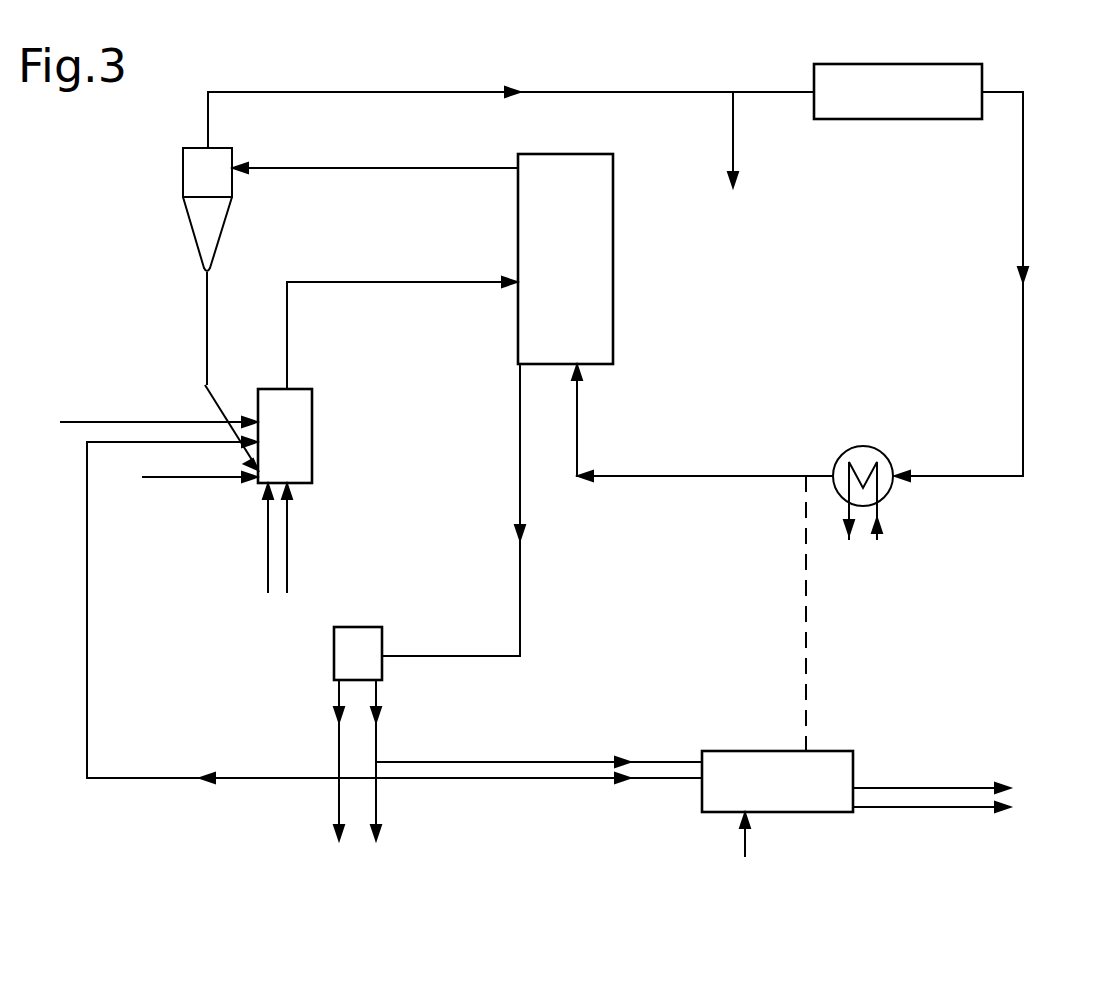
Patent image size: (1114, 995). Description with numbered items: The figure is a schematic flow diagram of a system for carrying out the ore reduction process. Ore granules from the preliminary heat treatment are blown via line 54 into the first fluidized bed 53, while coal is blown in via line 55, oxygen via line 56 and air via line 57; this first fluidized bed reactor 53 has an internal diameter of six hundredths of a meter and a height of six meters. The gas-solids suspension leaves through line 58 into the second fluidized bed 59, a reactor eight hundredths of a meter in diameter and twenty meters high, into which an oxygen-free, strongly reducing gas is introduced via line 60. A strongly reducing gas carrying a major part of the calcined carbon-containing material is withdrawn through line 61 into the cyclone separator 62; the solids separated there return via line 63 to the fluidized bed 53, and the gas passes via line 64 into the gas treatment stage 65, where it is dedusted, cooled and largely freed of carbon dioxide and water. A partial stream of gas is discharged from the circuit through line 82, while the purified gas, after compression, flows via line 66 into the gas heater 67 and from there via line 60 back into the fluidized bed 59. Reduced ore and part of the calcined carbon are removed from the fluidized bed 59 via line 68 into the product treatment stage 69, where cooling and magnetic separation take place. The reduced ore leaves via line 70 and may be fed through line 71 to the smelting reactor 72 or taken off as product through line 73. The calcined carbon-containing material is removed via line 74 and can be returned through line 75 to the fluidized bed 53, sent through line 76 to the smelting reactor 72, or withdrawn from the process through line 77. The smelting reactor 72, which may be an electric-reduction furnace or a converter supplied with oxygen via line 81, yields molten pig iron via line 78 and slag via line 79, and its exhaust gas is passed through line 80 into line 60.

The first fluidized bed 53 is at (302, 458).
The line 54 is at (60, 422).
The line 55 is at (158, 477).
The line 56 is at (268, 593).
The line 57 is at (288, 523).
The line 58 is at (293, 340).
The second fluidized bed 59 is at (517, 343).
The line 60 is at (578, 423).
The line 61 is at (397, 169).
The cyclone separator 62 is at (220, 233).
The line 63 is at (204, 385).
The line 64 is at (606, 92).
The gas treatment stage 65 is at (982, 78).
The line 66 is at (1025, 307).
The gas heater 67 is at (887, 457).
The line 68 is at (520, 452).
The product treatment stage 69 is at (356, 627).
The line 70 is at (378, 702).
The line 71 is at (512, 762).
The smelting reactor 72 is at (718, 750).
The line 73 is at (390, 802).
The line 74 is at (337, 702).
The line 75 is at (165, 778).
The line 76 is at (523, 782).
The line 77 is at (337, 810).
The line 78 is at (917, 808).
The line 79 is at (915, 785).
The line 80 is at (820, 593).
The line 81 is at (757, 835).
The line 82 is at (738, 149).